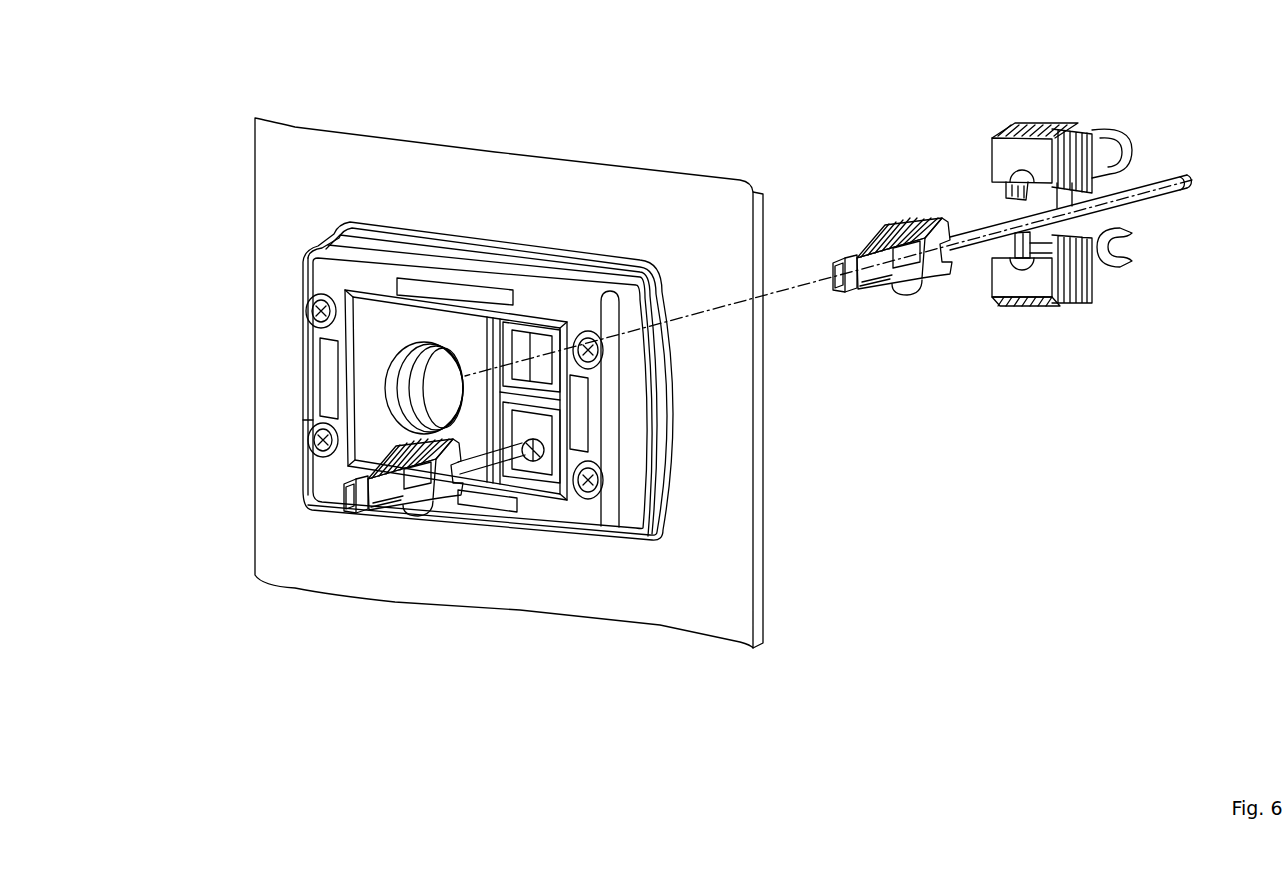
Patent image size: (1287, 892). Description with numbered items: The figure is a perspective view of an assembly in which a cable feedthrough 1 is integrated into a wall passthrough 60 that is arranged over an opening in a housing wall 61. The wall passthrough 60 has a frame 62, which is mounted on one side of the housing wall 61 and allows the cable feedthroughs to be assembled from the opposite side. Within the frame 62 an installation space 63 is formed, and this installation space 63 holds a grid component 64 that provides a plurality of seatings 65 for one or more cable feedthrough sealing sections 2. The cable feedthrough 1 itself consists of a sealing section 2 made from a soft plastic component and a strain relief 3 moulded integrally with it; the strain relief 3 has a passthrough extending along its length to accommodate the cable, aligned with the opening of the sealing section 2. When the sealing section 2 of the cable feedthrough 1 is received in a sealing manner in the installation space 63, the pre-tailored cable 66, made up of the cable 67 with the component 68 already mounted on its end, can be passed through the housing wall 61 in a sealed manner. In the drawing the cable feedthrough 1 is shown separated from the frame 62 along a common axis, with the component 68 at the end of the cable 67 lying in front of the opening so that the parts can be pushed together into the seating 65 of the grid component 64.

The cable feedthrough 1 is at (1058, 120).
The sealing section 2 is at (1067, 310).
The strain relief 3 is at (1113, 270).
The wall passthrough 60 is at (503, 364).
The housing wall 61 is at (743, 593).
The frame 62 is at (310, 366).
The installation space 63 is at (307, 417).
The grid component 64 is at (557, 407).
The seating 65 is at (533, 337).
The pre-tailored cable 66 is at (1180, 174).
The cable 67 is at (1182, 192).
The component 68 is at (923, 295).